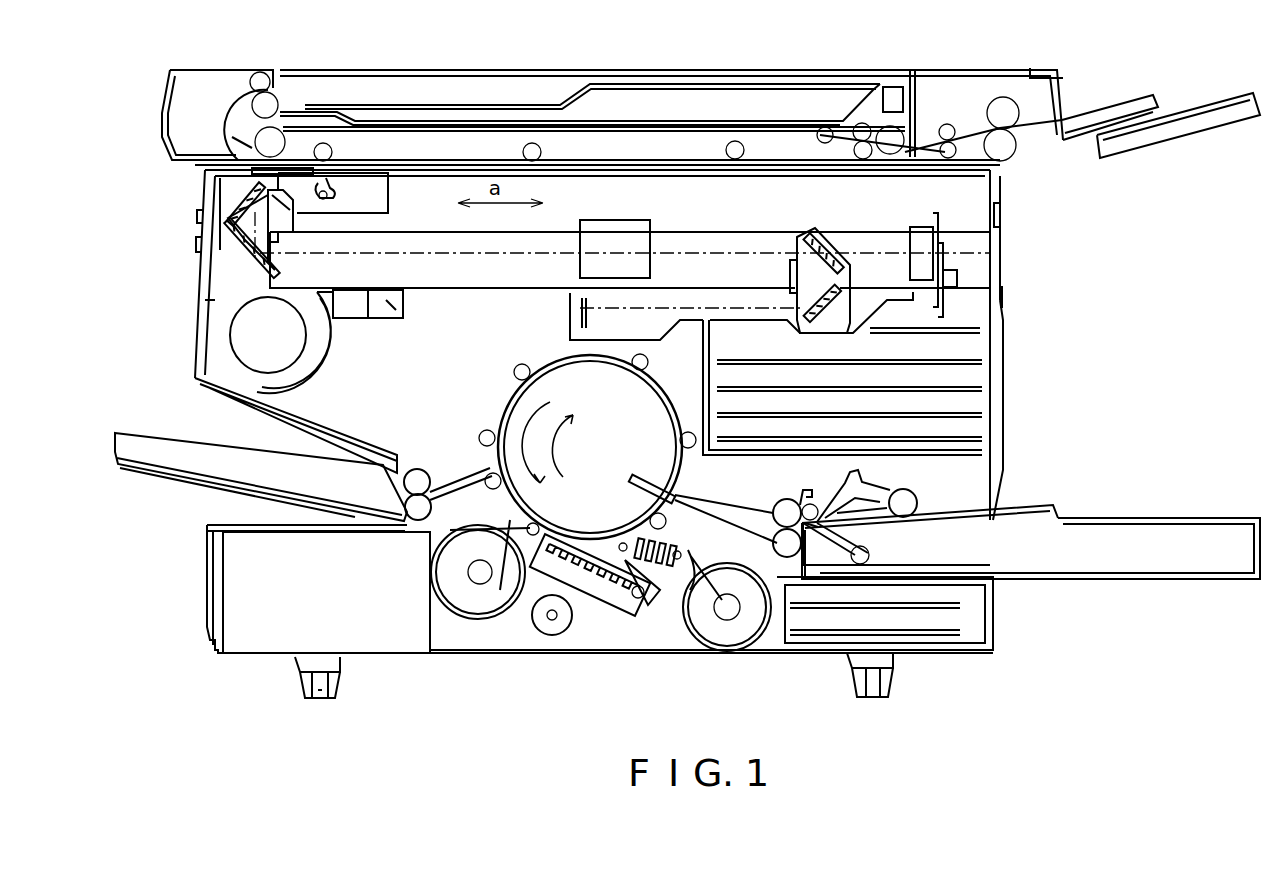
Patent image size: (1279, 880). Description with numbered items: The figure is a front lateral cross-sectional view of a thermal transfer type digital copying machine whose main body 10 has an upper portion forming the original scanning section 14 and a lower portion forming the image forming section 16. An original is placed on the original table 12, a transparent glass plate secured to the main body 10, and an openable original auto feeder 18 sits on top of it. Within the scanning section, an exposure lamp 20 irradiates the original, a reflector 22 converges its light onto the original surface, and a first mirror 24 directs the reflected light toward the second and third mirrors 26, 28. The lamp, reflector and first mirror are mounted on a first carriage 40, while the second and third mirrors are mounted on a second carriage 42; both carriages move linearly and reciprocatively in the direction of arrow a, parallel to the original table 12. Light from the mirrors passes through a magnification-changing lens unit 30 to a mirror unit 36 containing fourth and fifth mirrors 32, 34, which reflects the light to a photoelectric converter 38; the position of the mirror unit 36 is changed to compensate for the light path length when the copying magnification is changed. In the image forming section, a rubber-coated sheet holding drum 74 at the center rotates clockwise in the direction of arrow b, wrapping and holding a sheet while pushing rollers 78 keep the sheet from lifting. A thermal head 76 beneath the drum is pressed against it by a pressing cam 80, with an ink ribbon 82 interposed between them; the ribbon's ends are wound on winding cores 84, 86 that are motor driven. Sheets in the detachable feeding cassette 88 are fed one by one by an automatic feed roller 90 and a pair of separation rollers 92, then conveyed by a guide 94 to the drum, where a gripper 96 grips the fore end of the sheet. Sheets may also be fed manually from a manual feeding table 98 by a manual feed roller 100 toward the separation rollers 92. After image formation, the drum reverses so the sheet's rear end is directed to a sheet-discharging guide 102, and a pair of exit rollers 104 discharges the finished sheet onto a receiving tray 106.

The main body 10 is at (1000, 266).
The original table 12 is at (770, 160).
The original scanning section 14 is at (598, 185).
The image forming section 16 is at (513, 640).
The original auto feeder 18 is at (697, 78).
The exposure lamp 20 is at (330, 196).
The reflector 22 is at (388, 190).
The first mirror 24 is at (290, 215).
The second mirror 26 is at (245, 210).
The third mirror 28 is at (250, 258).
The magnification-changing lens unit 30 is at (617, 220).
The fourth mirror 32 is at (814, 238).
The fifth mirror 34 is at (825, 320).
The mirror unit 36 is at (845, 265).
The photoelectric converter 38 is at (578, 320).
The first carriage 40 is at (340, 230).
The second carriage 42 is at (235, 226).
The sheet holding drum 74 is at (505, 405).
The thermal head 76 is at (620, 592).
The pushing rollers 78 is at (514, 370).
The pressing cam 80 is at (555, 636).
The ink ribbon 82 is at (680, 565).
The winding core 84 is at (727, 620).
The winding core 86 is at (480, 580).
The feeding cassette 88 is at (1148, 540).
The automatic feed roller 90 is at (872, 553).
The separation rollers 92 is at (773, 542).
The guide 94 is at (720, 512).
The gripper 96 is at (640, 492).
The manual feeding table 98 is at (1035, 512).
The manual feed roller 100 is at (912, 497).
The sheet-discharging guide 102 is at (470, 480).
The exit rollers 104 is at (417, 469).
The receiving tray 106 is at (177, 462).